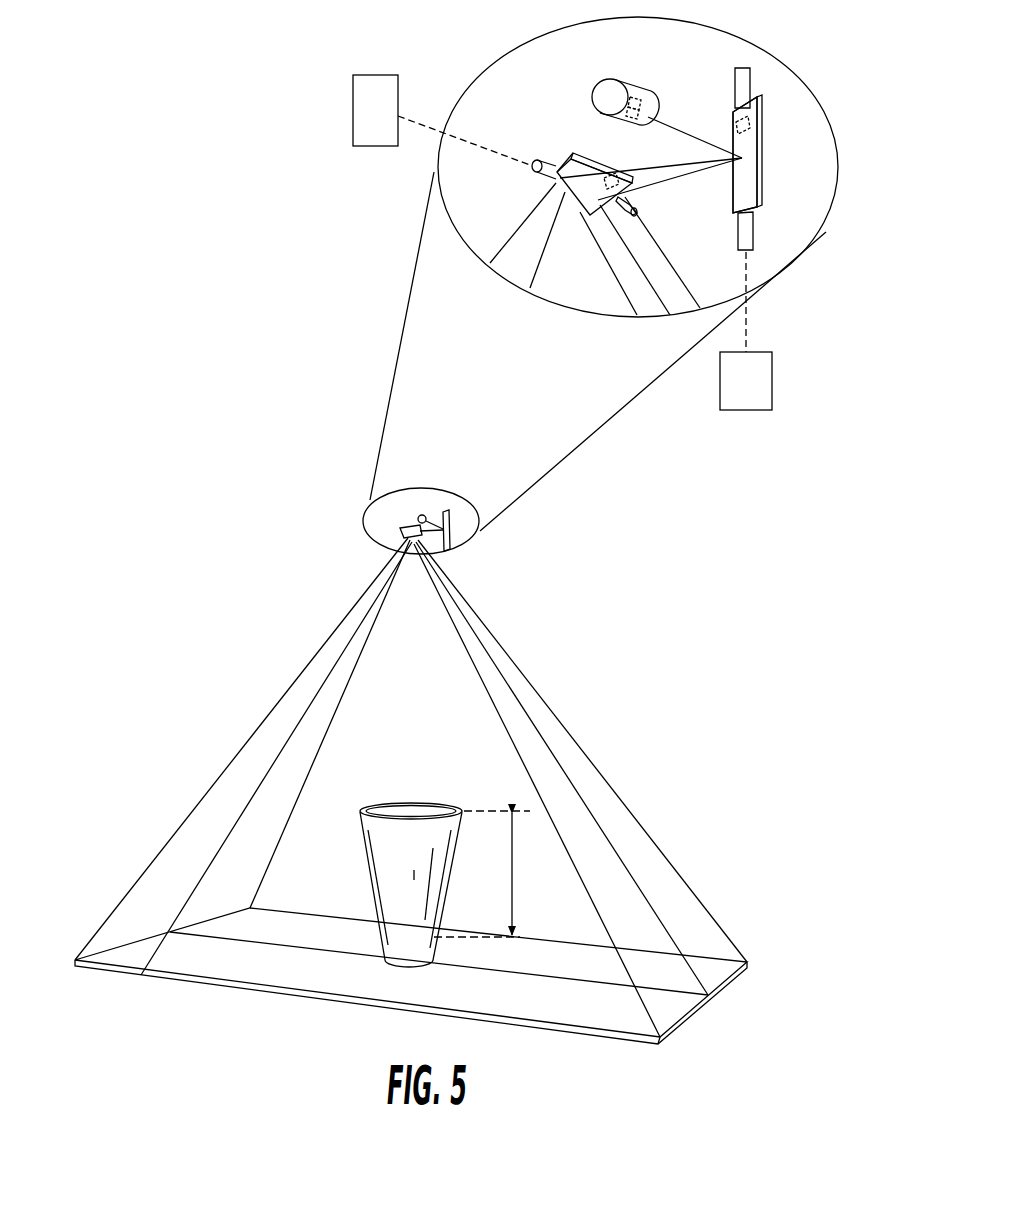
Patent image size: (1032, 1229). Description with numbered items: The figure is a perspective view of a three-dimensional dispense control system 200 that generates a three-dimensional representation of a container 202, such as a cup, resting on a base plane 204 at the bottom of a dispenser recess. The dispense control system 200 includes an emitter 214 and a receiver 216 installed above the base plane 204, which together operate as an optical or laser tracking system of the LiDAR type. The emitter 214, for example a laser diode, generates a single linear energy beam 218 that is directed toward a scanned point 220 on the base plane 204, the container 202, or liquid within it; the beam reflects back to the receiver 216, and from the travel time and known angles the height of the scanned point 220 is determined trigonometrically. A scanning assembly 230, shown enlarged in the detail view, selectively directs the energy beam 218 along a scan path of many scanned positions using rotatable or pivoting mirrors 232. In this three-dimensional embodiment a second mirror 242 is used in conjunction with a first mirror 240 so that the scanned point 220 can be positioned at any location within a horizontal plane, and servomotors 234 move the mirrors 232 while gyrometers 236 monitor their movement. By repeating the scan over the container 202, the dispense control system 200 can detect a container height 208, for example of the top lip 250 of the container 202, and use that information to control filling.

The dispense control system 200 is at (343, 517).
The container 202 is at (370, 880).
The base plane 204 is at (262, 986).
The container height 208 is at (528, 896).
The emitter 214 is at (647, 111).
The receiver 216 is at (630, 121).
The energy beam 218 is at (689, 128).
The scanned point 220 is at (142, 973).
The scanning assembly 230 is at (789, 233).
The mirrors 232 is at (531, 188).
The servomotors 234 is at (356, 117).
The gyrometers 236 is at (759, 118).
The first mirror 240 is at (763, 143).
The second mirror 242 is at (557, 172).
The top lip 250 is at (371, 802).